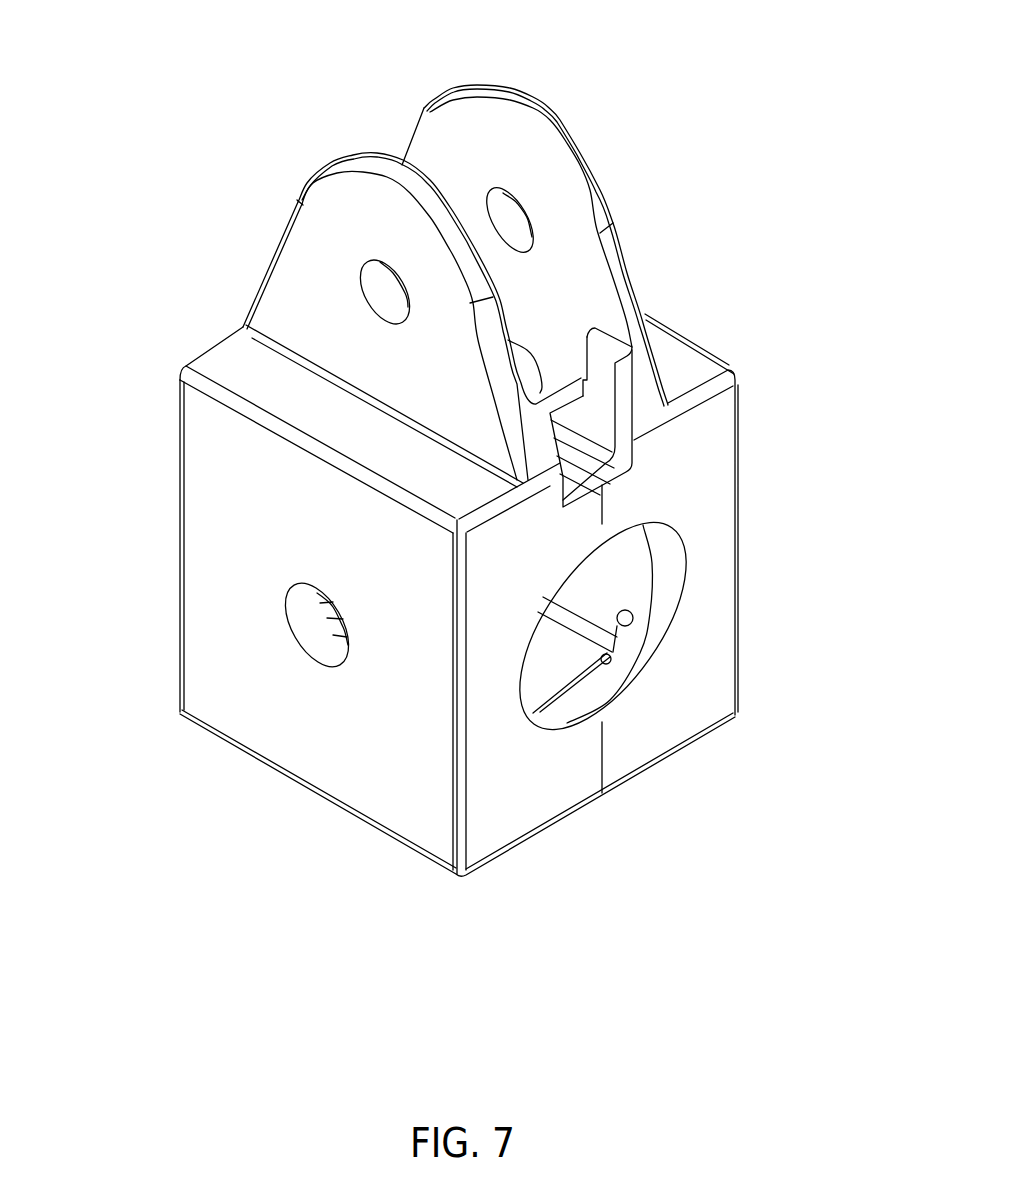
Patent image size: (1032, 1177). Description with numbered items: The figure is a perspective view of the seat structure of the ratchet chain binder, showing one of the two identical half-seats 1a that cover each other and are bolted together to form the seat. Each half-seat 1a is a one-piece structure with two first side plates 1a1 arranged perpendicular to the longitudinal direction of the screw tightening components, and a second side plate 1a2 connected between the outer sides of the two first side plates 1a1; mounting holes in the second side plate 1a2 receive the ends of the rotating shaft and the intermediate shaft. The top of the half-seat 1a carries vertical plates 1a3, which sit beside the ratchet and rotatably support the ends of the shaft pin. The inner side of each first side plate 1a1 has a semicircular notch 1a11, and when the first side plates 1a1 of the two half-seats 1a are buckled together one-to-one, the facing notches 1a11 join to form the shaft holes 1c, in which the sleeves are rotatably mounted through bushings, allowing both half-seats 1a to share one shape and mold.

The half-seat 1a is at (700, 347).
The first side plate 1a1 is at (710, 575).
The semicircular notch 1a11 is at (670, 567).
The second side plate 1a2 is at (250, 490).
The vertical plate 1a3 is at (345, 280).
The shaft hole 1c is at (547, 660).